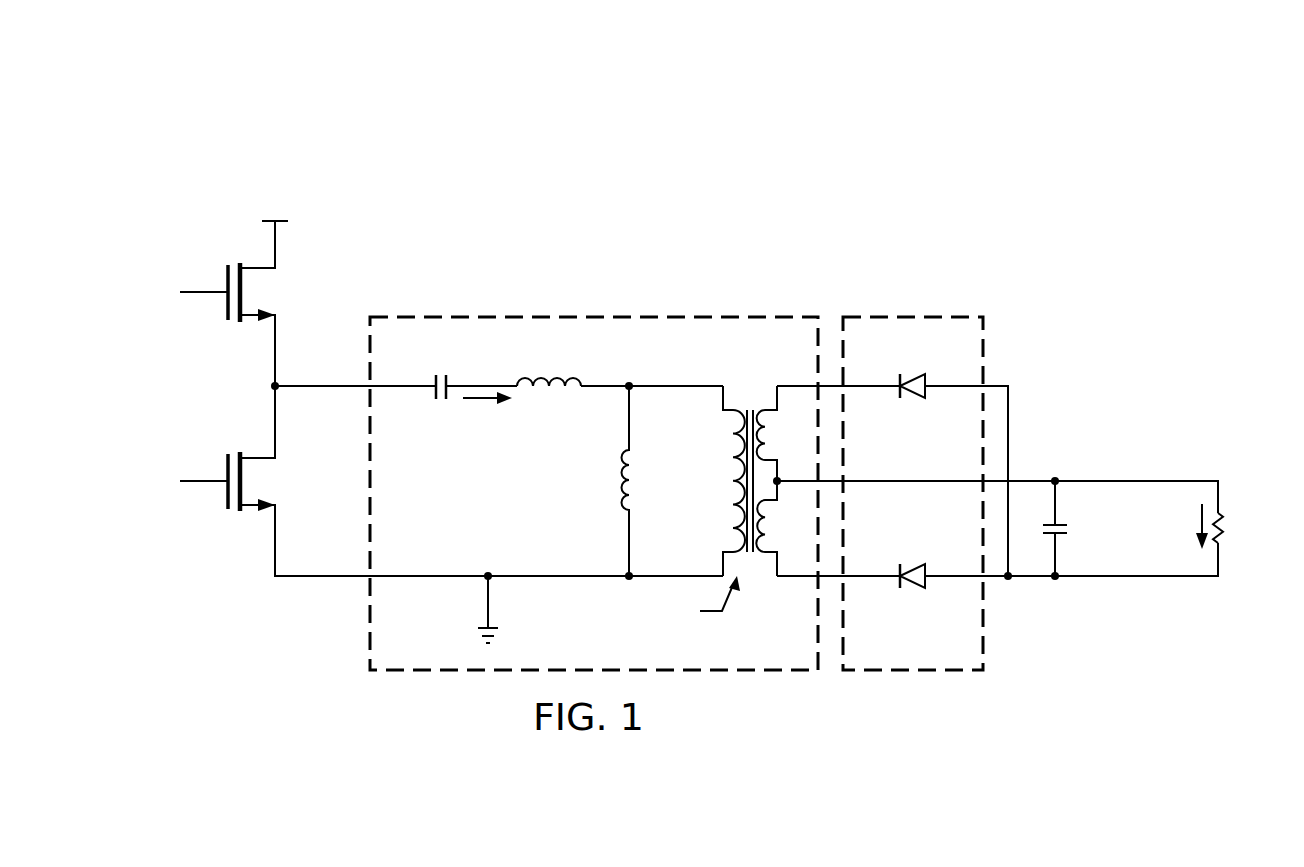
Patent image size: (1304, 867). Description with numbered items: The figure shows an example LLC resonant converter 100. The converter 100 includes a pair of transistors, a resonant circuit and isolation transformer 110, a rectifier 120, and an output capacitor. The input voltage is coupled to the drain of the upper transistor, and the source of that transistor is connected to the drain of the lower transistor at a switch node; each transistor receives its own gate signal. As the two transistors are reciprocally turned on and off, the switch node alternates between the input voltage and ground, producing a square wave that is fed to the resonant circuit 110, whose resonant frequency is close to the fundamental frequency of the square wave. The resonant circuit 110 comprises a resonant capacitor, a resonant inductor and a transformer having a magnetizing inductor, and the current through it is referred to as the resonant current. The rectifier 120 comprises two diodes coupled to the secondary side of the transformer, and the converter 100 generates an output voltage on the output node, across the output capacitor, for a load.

The LLC resonant converter 100 is at (868, 226).
The resonant circuit and isolation transformer 110 is at (548, 311).
The rectifier 120 is at (962, 311).